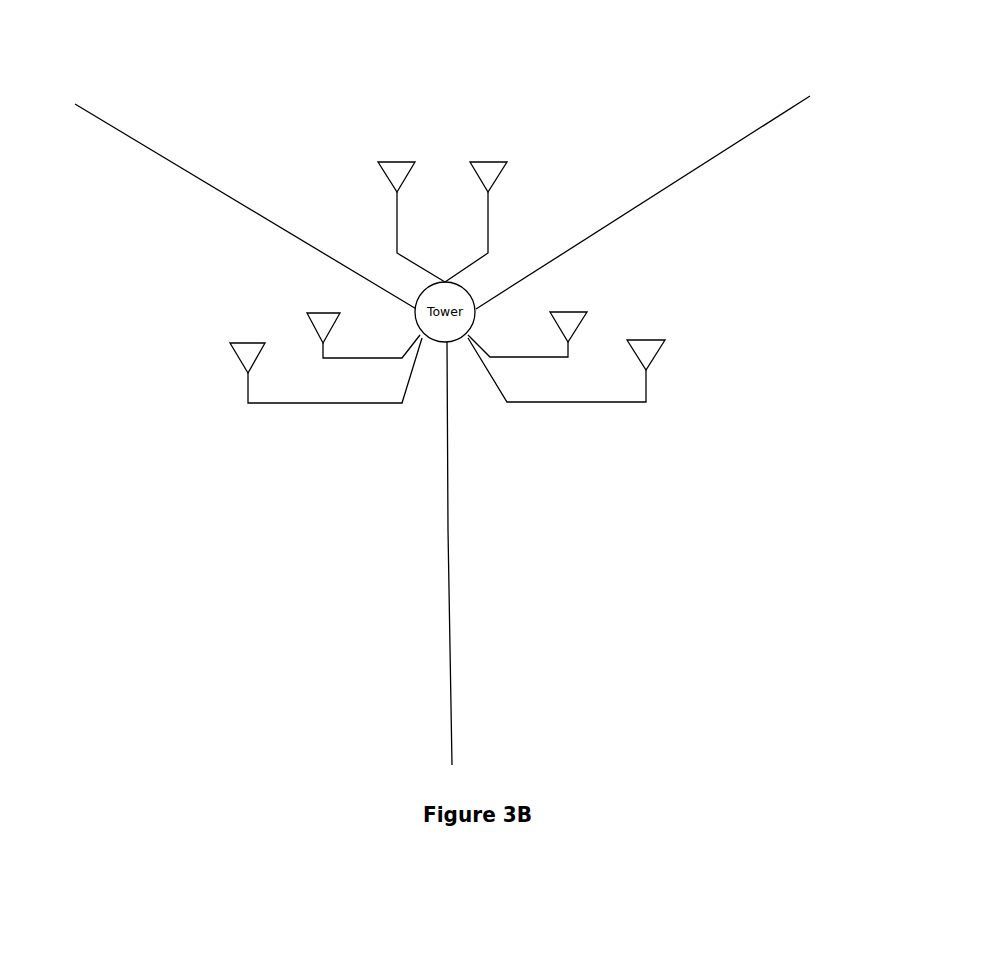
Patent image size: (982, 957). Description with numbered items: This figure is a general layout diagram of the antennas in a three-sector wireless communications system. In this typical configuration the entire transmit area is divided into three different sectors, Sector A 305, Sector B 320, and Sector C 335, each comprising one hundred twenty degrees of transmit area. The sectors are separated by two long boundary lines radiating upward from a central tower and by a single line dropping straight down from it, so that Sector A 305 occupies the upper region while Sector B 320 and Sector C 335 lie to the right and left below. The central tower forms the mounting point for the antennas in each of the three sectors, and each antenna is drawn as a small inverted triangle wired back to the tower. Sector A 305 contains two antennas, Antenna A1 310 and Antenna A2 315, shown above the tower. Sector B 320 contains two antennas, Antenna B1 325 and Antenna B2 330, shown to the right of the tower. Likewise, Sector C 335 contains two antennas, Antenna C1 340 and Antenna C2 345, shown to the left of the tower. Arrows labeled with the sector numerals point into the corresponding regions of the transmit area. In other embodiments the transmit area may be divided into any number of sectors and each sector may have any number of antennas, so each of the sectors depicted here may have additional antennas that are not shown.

The Sector A 305 is at (312, 71).
The Antenna A1 310 is at (395, 162).
The Antenna A2 315 is at (490, 162).
The Sector B 320 is at (664, 454).
The Antenna B1 325 is at (572, 312).
The Antenna B2 330 is at (645, 340).
The Sector C 335 is at (180, 452).
The Antenna C1 340 is at (318, 313).
The Antenna C2 345 is at (247, 343).